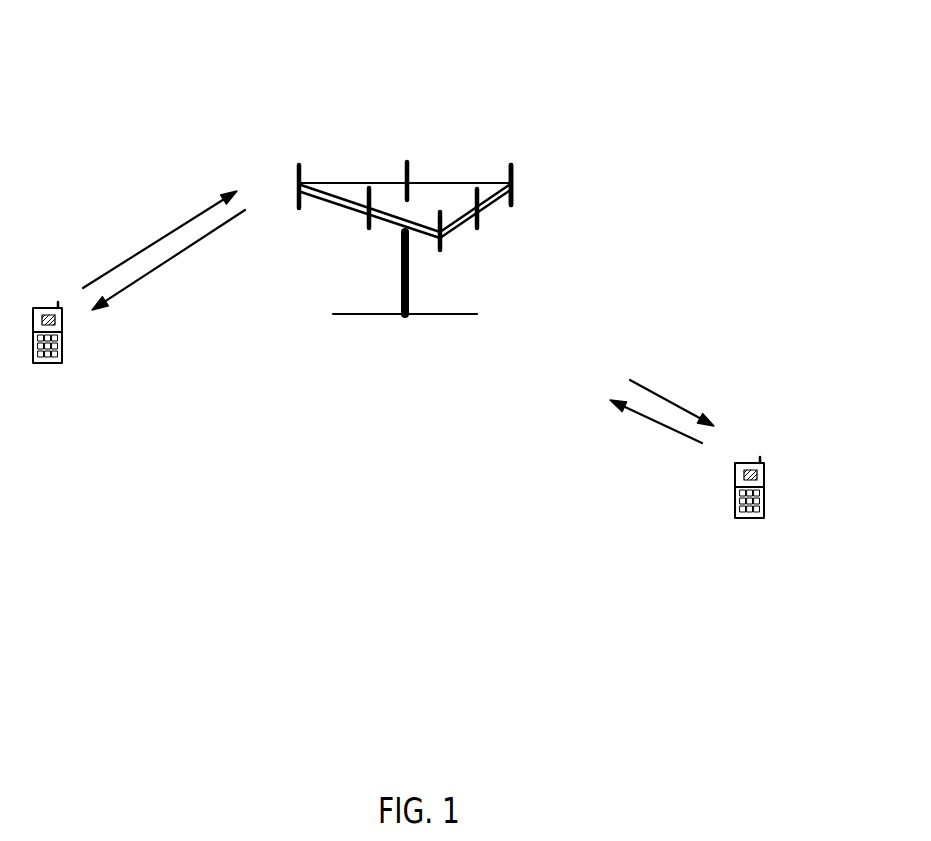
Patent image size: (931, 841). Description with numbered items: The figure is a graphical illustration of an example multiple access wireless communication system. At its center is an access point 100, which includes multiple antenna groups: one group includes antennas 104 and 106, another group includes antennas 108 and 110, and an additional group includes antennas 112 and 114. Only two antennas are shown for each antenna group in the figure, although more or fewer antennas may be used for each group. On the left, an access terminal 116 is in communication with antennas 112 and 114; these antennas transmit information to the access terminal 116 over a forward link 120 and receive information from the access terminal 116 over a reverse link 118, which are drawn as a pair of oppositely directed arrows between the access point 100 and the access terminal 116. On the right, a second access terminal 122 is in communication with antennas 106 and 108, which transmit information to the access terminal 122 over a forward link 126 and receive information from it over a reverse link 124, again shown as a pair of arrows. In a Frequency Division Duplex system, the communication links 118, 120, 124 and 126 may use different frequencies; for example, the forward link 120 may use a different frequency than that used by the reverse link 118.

The access point 100 is at (390, 316).
The antenna 104 is at (440, 250).
The antenna 106 is at (477, 228).
The antenna 108 is at (515, 202).
The antenna 110 is at (408, 163).
The antenna 112 is at (300, 177).
The antenna 114 is at (370, 228).
The access terminal 116 is at (48, 308).
The reverse link 118 is at (157, 240).
The forward link 120 is at (177, 257).
The access terminal 122 is at (748, 460).
The reverse link 124 is at (643, 417).
The forward link 126 is at (678, 407).